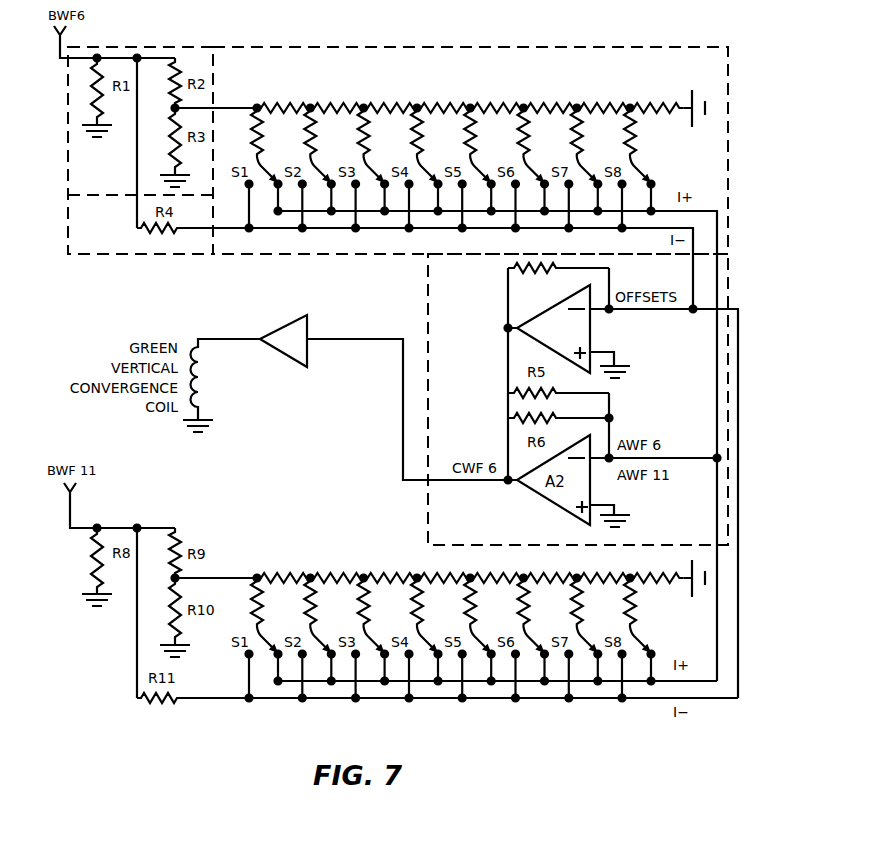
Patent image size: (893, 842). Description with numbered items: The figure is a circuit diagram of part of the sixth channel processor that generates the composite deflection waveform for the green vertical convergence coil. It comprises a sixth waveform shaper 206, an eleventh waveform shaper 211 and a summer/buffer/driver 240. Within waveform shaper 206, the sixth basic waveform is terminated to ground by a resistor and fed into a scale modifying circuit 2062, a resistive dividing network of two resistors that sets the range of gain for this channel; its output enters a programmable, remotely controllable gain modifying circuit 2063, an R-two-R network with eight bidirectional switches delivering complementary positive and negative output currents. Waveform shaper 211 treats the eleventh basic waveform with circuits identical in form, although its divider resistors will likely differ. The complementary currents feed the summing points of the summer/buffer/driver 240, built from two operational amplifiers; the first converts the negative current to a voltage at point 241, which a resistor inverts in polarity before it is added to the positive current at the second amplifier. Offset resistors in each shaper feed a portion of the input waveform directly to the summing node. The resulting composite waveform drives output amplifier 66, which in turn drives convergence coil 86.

The scale modifying circuit 2062 is at (207, 45).
The gain modifying circuit 2063 is at (422, 45).
The sixth waveform shaper 206 is at (371, 89).
The summer/buffer/driver 240 is at (424, 298).
The point 241 is at (542, 340).
The output amplifier 66 is at (308, 350).
The convergence coil 86 is at (200, 372).
The eleventh waveform shaper 211 is at (223, 673).